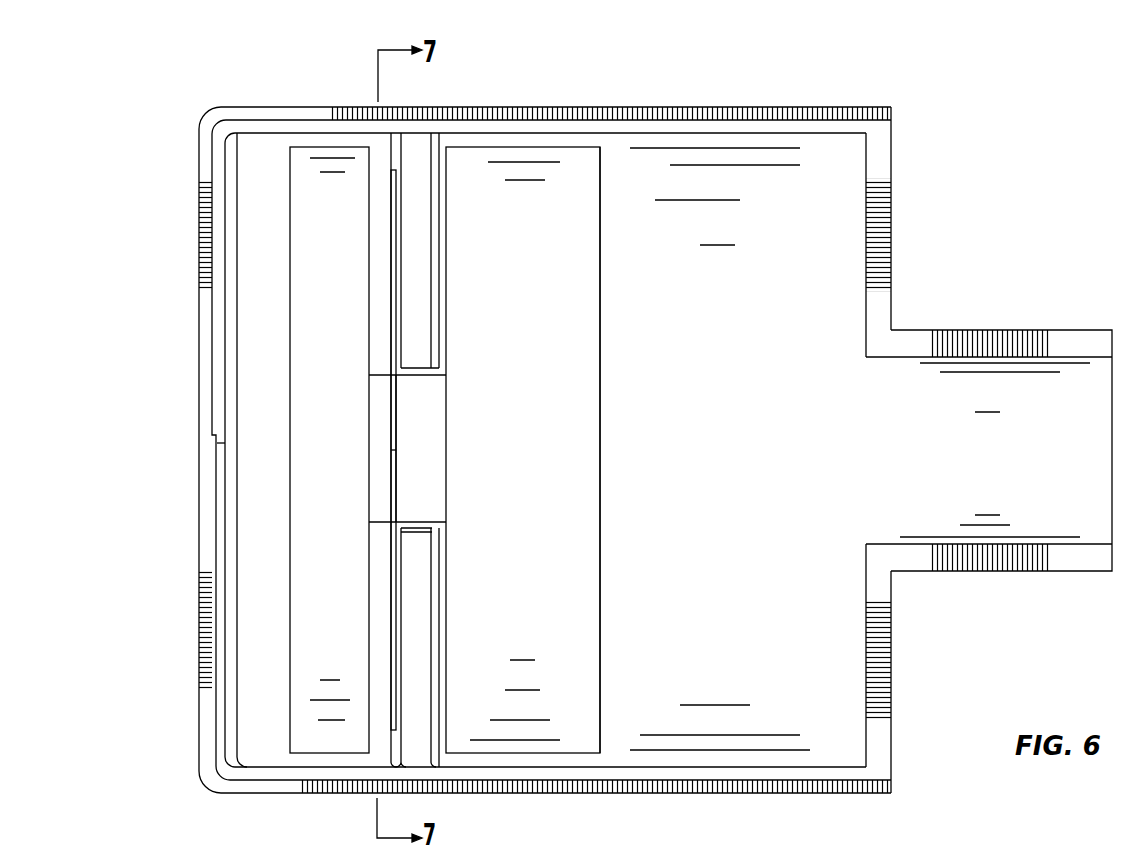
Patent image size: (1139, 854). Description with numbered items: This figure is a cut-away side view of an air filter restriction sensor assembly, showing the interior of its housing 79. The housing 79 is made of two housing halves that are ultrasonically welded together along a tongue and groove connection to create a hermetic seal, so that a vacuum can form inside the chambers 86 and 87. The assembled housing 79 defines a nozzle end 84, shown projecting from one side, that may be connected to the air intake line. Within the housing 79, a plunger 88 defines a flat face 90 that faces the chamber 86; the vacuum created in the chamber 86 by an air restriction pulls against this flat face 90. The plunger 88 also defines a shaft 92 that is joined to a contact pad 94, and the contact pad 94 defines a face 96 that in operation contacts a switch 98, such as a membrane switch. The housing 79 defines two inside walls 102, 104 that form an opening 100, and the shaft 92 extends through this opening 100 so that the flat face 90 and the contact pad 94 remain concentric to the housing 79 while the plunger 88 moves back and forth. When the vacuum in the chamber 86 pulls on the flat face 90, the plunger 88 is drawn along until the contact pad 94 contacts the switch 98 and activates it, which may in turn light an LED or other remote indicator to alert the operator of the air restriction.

The housing 79 is at (765, 110).
The nozzle end 84 is at (996, 334).
The chamber 86 is at (820, 222).
The chamber 87 is at (258, 145).
The plunger 88 is at (535, 168).
The flat face 90 is at (603, 205).
The shaft 92 is at (422, 397).
The contact pad 94 is at (301, 158).
The face 96 is at (377, 157).
The switch 98 is at (390, 688).
The opening 100 is at (416, 532).
The inside wall 102 is at (417, 150).
The inside wall 104 is at (418, 727).